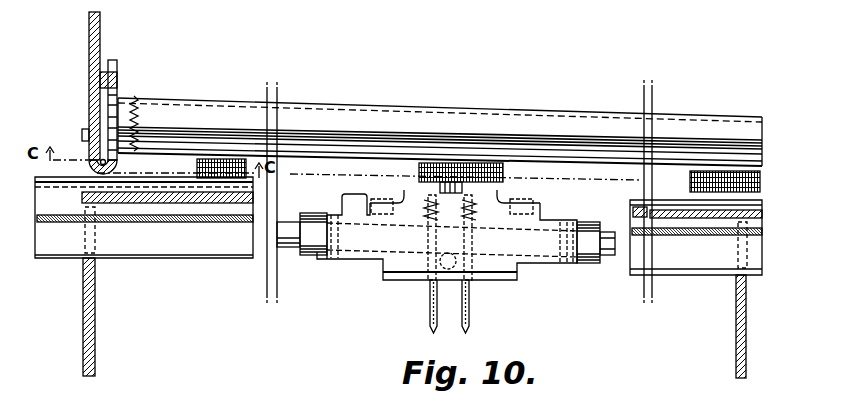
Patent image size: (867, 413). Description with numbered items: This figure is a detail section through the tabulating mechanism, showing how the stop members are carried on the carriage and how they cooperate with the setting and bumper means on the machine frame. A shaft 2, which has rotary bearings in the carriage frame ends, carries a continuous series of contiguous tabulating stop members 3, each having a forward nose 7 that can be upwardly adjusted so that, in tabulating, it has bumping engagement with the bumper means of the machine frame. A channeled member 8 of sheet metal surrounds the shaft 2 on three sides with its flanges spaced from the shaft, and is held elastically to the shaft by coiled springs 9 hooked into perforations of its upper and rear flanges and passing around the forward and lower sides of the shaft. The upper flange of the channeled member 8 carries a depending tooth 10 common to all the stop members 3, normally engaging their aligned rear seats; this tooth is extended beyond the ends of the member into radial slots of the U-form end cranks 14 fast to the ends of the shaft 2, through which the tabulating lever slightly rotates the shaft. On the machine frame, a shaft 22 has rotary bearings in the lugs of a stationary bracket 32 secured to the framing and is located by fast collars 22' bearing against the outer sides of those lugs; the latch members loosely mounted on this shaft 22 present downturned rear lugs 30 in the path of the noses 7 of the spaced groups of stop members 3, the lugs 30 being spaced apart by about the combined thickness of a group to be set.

The shaft 2 is at (82, 136).
The end crank 14 is at (120, 65).
The coiled spring 9 is at (136, 113).
The channeled member 8 is at (192, 106).
The depending tooth 10 is at (227, 141).
The tabulating stop member 3 is at (197, 165).
The downturned rear lug 30 is at (413, 184).
The forward nose 7 is at (451, 194).
The shaft 22 is at (446, 252).
The fast collar 22' is at (450, 269).
The stationary bracket 32 is at (377, 255).